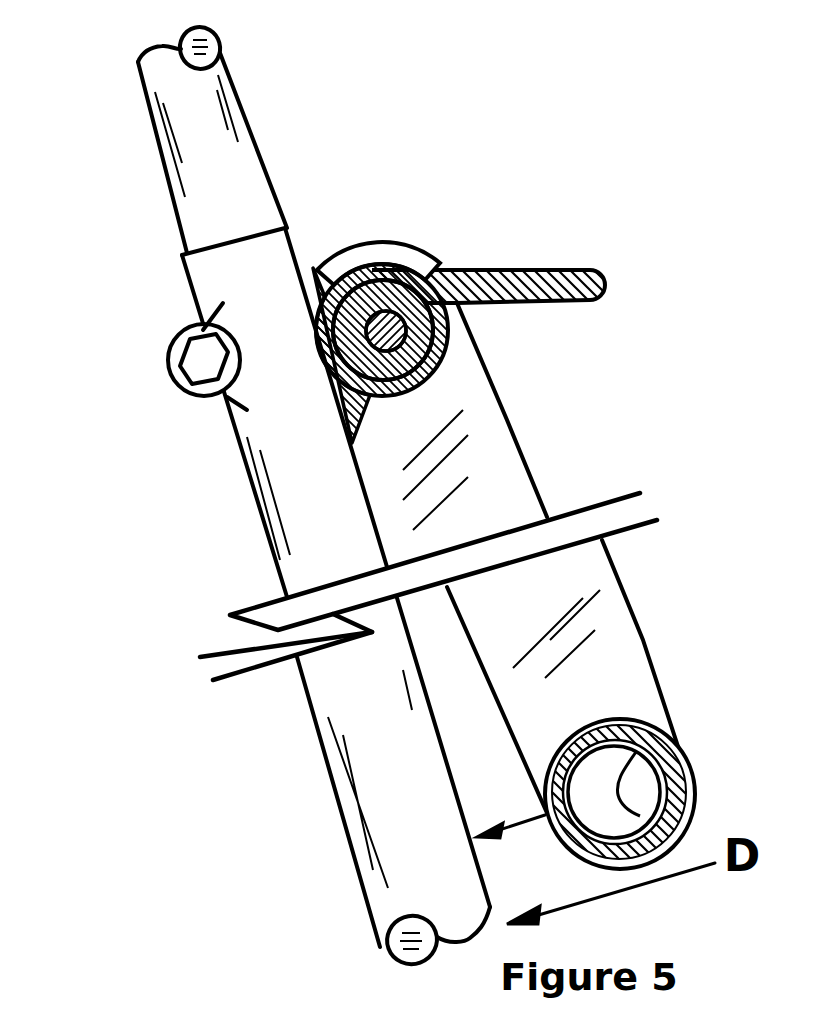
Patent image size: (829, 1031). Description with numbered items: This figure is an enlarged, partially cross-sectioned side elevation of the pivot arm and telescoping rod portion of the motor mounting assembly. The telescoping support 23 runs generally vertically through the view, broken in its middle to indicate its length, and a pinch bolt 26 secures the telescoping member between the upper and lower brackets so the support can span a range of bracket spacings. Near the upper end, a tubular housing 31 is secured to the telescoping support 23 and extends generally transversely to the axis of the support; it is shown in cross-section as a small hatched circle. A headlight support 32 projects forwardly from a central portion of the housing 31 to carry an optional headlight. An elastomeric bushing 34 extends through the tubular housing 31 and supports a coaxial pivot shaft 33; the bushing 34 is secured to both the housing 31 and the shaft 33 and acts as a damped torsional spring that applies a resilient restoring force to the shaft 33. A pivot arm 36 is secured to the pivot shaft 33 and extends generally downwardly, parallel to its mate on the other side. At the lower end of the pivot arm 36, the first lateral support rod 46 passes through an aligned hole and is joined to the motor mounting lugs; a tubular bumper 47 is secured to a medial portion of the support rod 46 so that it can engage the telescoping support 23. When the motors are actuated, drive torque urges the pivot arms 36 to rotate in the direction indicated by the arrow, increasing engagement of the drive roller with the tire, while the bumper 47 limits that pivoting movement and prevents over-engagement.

The telescoping support 23 is at (253, 512).
The pinch bolt 26 is at (173, 343).
The tubular housing 31 is at (384, 305).
The headlight support 32 is at (547, 270).
The pivot shaft 33 is at (420, 275).
The elastomeric bushing 34 is at (433, 338).
The pivot arm 36 is at (523, 447).
The first lateral support rod 46 is at (672, 745).
The tubular bumper 47 is at (636, 752).